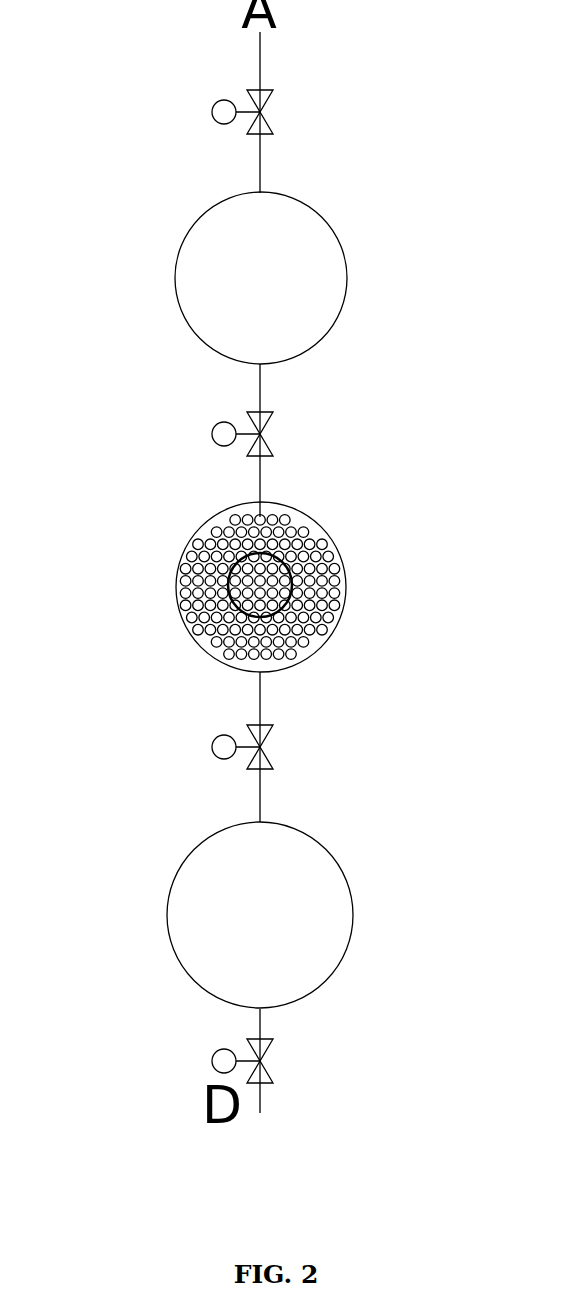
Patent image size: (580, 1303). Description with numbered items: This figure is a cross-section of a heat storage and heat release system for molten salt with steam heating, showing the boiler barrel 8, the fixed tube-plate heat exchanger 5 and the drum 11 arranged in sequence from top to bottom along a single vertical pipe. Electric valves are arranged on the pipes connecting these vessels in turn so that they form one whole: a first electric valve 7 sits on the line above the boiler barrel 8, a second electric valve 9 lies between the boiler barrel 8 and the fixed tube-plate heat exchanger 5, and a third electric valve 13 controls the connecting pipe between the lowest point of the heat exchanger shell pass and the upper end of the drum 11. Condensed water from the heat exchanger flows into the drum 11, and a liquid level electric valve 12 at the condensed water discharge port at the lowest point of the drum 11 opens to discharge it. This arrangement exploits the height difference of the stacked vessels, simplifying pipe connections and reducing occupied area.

The first electric valve 7 is at (260, 112).
The boiler barrel 8 is at (176, 280).
The second electric valve 9 is at (260, 434).
The fixed tube-plate heat exchanger 5 is at (176, 586).
The third electric valve 13 is at (260, 747).
The drum 11 is at (167, 915).
The liquid level electric valve 12 is at (260, 1061).